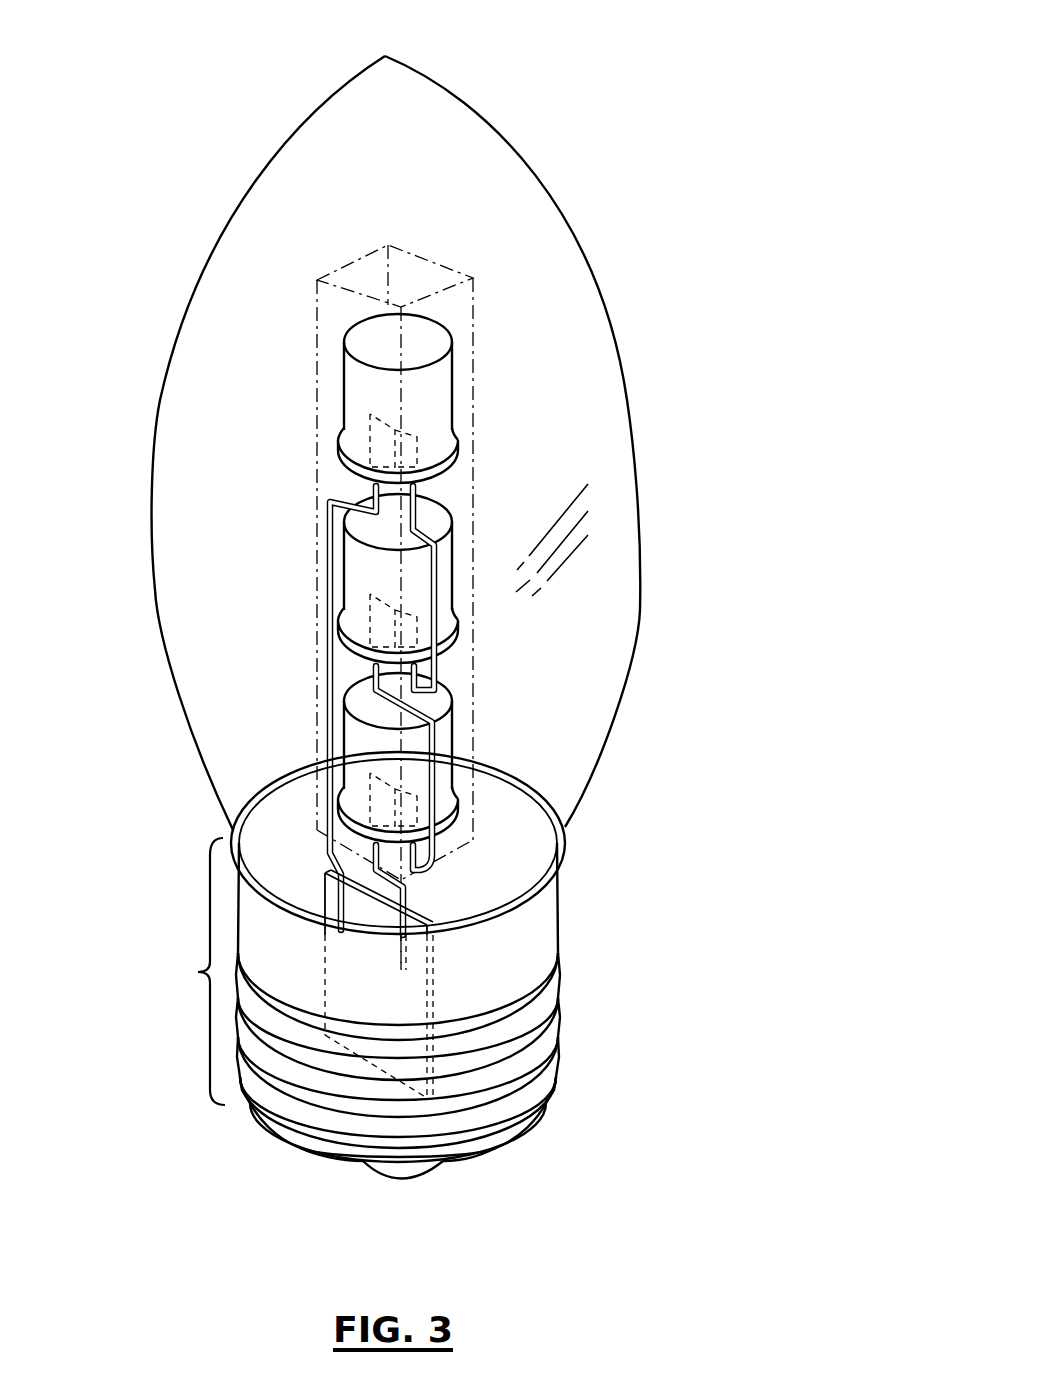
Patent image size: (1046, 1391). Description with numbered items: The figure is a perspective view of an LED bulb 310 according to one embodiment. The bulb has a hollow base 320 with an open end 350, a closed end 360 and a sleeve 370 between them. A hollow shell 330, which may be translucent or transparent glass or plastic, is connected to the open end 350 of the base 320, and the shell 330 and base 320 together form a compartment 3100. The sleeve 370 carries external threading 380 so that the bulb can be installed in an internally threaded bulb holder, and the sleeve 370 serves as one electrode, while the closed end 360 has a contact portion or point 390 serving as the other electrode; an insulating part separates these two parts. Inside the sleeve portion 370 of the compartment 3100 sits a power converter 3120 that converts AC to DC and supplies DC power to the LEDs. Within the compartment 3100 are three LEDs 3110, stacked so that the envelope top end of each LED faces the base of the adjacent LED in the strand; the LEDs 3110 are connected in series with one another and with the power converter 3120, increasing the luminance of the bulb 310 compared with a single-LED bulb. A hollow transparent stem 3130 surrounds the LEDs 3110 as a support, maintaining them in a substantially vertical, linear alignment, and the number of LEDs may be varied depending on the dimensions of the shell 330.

The LED bulb 310 is at (616, 70).
The hollow transparent stem 3130 is at (470, 295).
The compartment 3100 is at (578, 610).
The LEDs 3110 is at (447, 372).
The hollow shell 330 is at (635, 427).
The open end 350 is at (567, 837).
The power converter 3120 is at (437, 970).
The hollow base 320 is at (459, 1050).
The external threading 380 is at (557, 998).
The closed end 360 is at (507, 1140).
The contact portion or point 390 is at (405, 1183).
The sleeve 370 is at (178, 971).